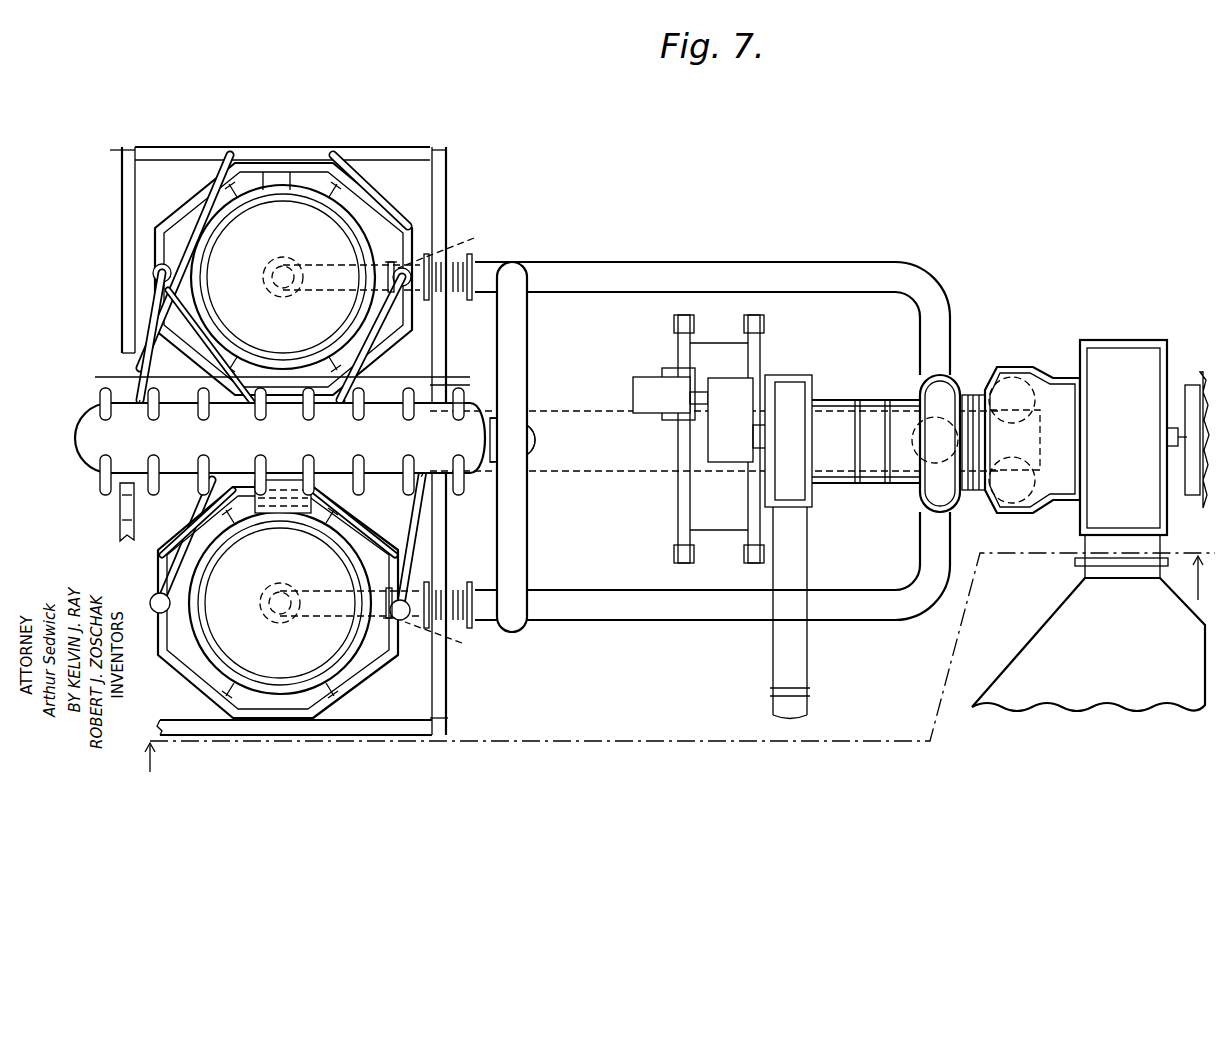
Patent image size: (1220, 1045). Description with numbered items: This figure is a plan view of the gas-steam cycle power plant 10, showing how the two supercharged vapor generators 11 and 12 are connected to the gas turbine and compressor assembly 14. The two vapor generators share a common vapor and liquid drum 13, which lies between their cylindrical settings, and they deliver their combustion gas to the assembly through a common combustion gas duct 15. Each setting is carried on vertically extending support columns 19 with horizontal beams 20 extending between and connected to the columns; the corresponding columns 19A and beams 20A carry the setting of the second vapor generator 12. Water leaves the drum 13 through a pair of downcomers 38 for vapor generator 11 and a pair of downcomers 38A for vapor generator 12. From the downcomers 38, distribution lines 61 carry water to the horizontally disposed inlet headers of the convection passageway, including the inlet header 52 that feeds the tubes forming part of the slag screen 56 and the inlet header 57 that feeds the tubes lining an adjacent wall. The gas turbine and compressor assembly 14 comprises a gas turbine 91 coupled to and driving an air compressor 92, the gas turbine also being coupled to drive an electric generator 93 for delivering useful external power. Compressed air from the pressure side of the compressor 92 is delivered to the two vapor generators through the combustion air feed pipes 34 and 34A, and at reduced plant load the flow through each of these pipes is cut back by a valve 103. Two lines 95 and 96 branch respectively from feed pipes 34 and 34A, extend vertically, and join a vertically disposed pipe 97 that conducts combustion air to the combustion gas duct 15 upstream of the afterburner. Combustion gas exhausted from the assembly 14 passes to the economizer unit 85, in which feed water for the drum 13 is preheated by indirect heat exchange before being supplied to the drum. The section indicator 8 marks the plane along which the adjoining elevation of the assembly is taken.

The section line 8- 8 is at (678, 674).
The gas-steam cycle power plant 10 is at (233, 138).
The supercharged vapor generator 11 is at (332, 748).
The supercharged vapor generator 12 is at (402, 208).
The vapor and liquid drum 13 is at (86, 415).
The gas turbine and compressor assembly 14 is at (200, 245).
The combustion gas duct 15 is at (384, 441).
The support columns 19 is at (448, 727).
The upper frame member 19A is at (120, 158).
The horizontal beams 20 is at (448, 693).
The upper frame plate 20A is at (122, 205).
The combustion air feed pipe 34 is at (612, 620).
The combustion air feed pipe 34A is at (636, 272).
The downcomers 38 is at (190, 526).
The downcomers 38A is at (386, 287).
The inlet header 52 is at (190, 583).
The slag screen 56 is at (460, 384).
The inlet header 57 is at (243, 362).
The distribution lines 61 is at (165, 562).
The economizer unit 85 is at (1040, 630).
The gas turbine 91 is at (1020, 366).
The air compressor 92 is at (935, 380).
The electric generator 93 is at (1195, 385).
The line 95 is at (527, 542).
The line 96 is at (527, 352).
The vertically disposed pipe 97 is at (530, 440).
The valves 103 is at (455, 435).